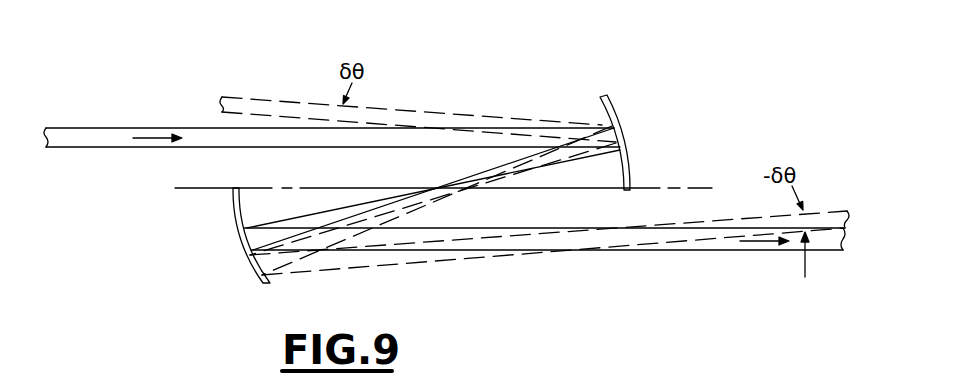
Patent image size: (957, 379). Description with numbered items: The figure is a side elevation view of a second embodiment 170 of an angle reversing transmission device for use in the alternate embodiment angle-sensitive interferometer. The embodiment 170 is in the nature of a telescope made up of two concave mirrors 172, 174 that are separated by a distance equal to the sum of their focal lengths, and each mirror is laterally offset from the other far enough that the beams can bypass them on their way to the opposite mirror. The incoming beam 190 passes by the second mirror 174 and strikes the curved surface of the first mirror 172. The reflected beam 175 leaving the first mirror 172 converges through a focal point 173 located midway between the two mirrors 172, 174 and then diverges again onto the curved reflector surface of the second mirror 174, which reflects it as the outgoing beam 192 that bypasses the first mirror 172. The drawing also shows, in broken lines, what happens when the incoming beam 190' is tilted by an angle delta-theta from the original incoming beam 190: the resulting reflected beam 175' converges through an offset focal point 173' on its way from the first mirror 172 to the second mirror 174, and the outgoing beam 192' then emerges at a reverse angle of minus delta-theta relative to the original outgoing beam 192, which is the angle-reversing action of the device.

The angle reversing transmission device embodiment 170 is at (566, 68).
The first concave mirror 172 is at (608, 108).
The second concave mirror 174 is at (243, 208).
The focal point 173 is at (433, 189).
The reflected beam 175 is at (433, 189).
The offset focal point 173' is at (437, 200).
The reflected beam from angled incoming beam 175' is at (433, 199).
The incoming beam 190 is at (332, 118).
The varied incoming beam 190' is at (404, 100).
The outgoing beam 192 is at (544, 261).
The reversed-angle outgoing beam 192' is at (549, 238).